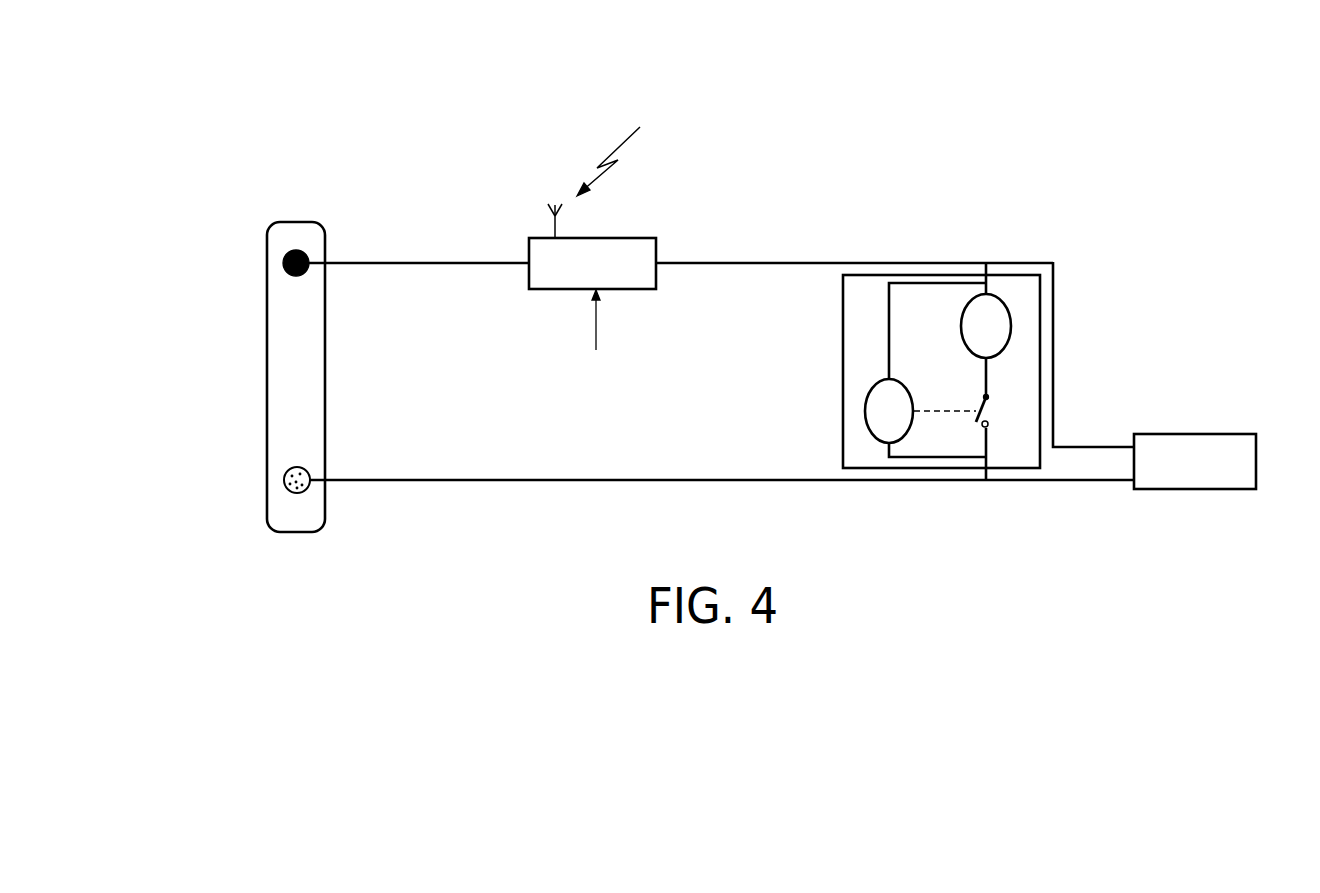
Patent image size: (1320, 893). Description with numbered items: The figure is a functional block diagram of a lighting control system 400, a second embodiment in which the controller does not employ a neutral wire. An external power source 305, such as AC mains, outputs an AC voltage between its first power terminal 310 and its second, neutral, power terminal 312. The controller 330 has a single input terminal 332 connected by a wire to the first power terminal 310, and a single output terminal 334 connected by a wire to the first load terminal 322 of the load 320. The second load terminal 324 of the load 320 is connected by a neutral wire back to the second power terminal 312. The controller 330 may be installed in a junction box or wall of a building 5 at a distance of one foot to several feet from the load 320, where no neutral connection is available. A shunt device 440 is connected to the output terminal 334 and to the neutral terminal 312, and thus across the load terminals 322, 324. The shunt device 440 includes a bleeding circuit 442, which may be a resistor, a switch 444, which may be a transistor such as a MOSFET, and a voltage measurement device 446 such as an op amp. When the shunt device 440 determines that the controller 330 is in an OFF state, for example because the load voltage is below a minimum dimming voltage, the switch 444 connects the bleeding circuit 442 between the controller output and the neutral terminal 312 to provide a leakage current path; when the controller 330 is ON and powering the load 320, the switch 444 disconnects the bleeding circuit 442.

The building 5 is at (651, 152).
The external power source 305 is at (272, 410).
The first power terminal 310 is at (374, 252).
The second power terminal 312 is at (648, 468).
The load 320 is at (1216, 434).
The first load terminal 322 is at (1093, 354).
The second load terminal 324 is at (1060, 496).
The controller 330 is at (541, 281).
The input terminal 332 is at (484, 252).
The output terminal 334 is at (854, 252).
The lighting control system 400 is at (1235, 92).
The shunt device 440 is at (848, 293).
The bleeding circuit 442 is at (963, 311).
The switch 444 is at (983, 410).
The voltage measurement device 446 is at (866, 411).